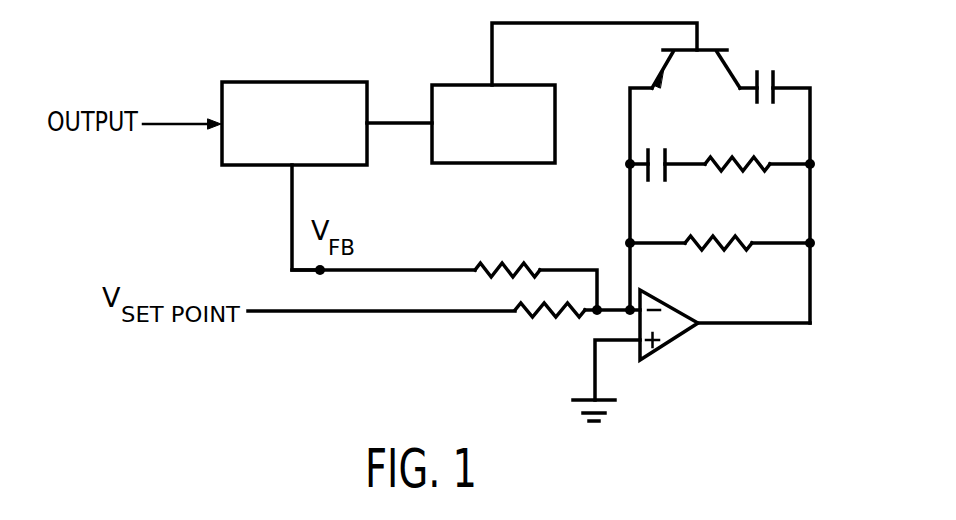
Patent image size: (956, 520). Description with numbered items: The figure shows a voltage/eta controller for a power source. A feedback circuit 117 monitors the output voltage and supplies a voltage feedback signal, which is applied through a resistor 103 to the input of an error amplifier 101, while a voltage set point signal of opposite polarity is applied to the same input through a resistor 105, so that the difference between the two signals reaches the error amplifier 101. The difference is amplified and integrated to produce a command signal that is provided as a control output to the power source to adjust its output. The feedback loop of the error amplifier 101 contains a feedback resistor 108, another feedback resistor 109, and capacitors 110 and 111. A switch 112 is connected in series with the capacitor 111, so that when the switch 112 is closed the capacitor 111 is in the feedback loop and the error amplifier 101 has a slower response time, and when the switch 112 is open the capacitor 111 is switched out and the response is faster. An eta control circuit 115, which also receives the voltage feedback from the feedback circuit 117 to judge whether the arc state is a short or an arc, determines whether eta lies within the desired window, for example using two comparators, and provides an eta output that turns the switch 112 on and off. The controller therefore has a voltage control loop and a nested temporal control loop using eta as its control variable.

The error amplifier 101 is at (680, 313).
The resistor 103 is at (521, 262).
The resistor 105 is at (537, 319).
The feedback resistor 108 is at (735, 156).
The feedback resistor 109 is at (711, 234).
The capacitor 110 is at (665, 176).
The capacitor 111 is at (776, 100).
The switch 112 is at (658, 50).
The eta control circuit 115 is at (450, 85).
The feedback circuit 117 is at (326, 82).